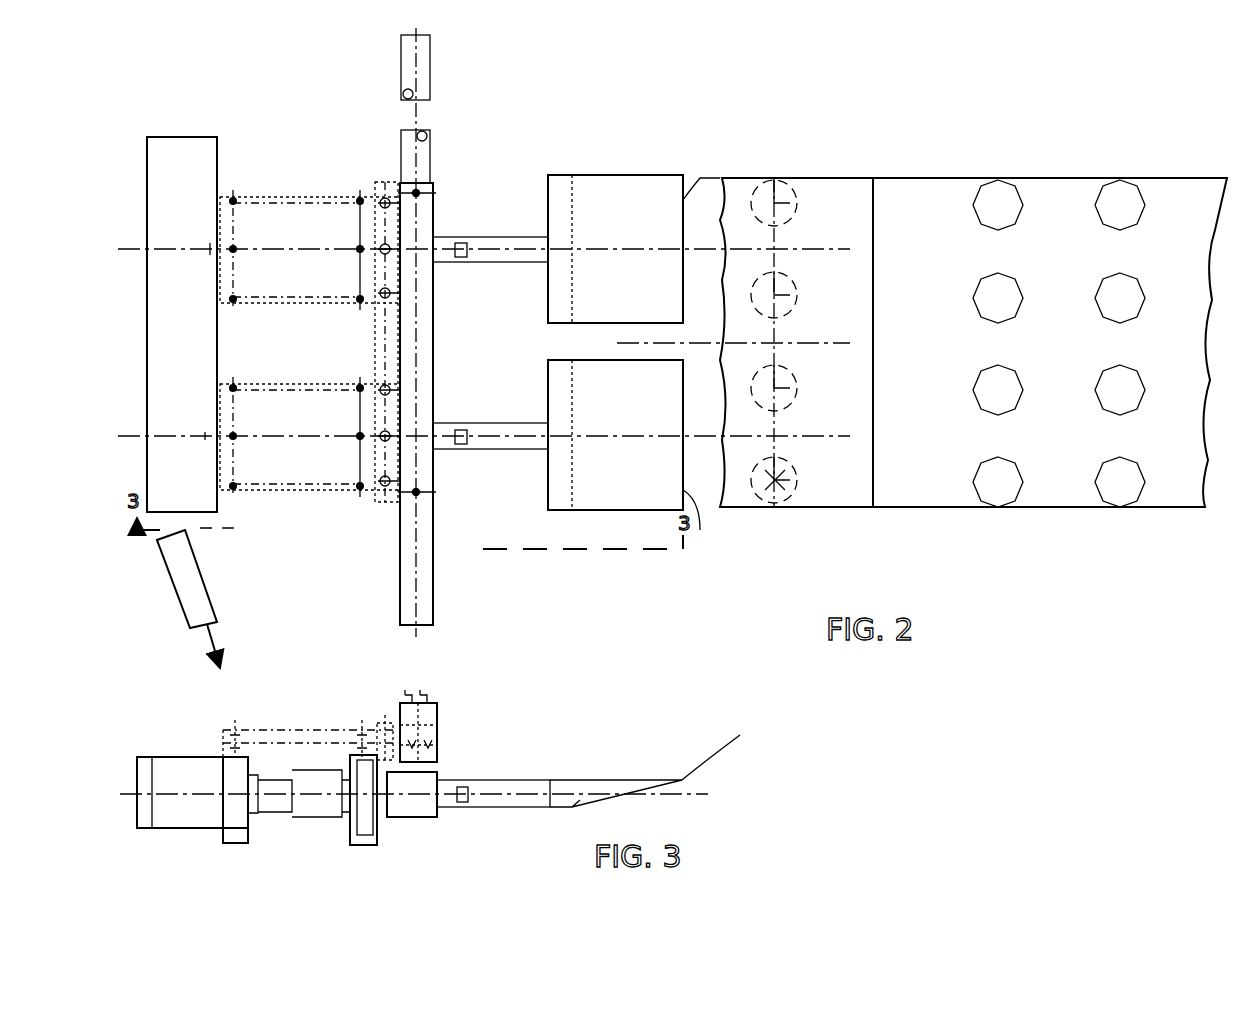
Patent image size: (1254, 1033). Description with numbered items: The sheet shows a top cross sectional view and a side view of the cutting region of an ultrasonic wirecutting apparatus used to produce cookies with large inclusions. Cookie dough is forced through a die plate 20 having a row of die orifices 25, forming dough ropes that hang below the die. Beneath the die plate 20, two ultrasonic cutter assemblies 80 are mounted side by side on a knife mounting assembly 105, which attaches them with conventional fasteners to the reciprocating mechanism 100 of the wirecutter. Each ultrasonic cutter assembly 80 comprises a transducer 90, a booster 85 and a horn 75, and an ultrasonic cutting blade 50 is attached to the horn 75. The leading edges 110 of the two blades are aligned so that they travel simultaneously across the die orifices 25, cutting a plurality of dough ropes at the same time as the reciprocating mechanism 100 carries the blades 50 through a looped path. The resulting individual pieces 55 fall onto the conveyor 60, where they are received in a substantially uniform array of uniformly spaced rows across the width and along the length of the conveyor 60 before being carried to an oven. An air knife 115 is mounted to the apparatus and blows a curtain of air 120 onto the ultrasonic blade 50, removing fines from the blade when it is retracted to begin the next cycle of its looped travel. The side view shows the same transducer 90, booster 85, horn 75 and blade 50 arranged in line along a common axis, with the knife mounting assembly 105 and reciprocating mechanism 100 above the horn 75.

In FIG. 2, the die plate 20 is at (765, 510).
In FIG. 2, the die orifices 25 is at (795, 180).
In FIG. 2, the ultrasonic cutting blade 50 is at (620, 160).
In FIG. 3, the ultrasonic cutting blade 50 is at (600, 778).
In FIG. 2, the individual pieces 55 is at (1005, 182).
In FIG. 2, the conveyor 60 is at (960, 510).
In FIG. 2, the horn 75 is at (508, 262).
In FIG. 3, the horn 75 is at (497, 778).
In FIG. 3, the ultrasonic cutter assembly 80 is at (200, 757).
In FIG. 2, the booster 85 is at (375, 185).
In FIG. 3, the booster 85 is at (365, 845).
In FIG. 3, the transducer 90 is at (185, 828).
In FIG. 2, the reciprocating mechanism 100 is at (403, 85).
In FIG. 3, the reciprocating mechanism 100 is at (430, 703).
In FIG. 2, the knife mounting assembly 105 is at (275, 197).
In FIG. 3, the knife mounting assembly 105 is at (302, 730).
In FIG. 2, the leading edges 110 is at (705, 170).
In FIG. 3, the leading edges 110 is at (736, 753).
In FIG. 2, the air knife 115 is at (185, 130).
In FIG. 2, the curtain of air 120 is at (210, 640).